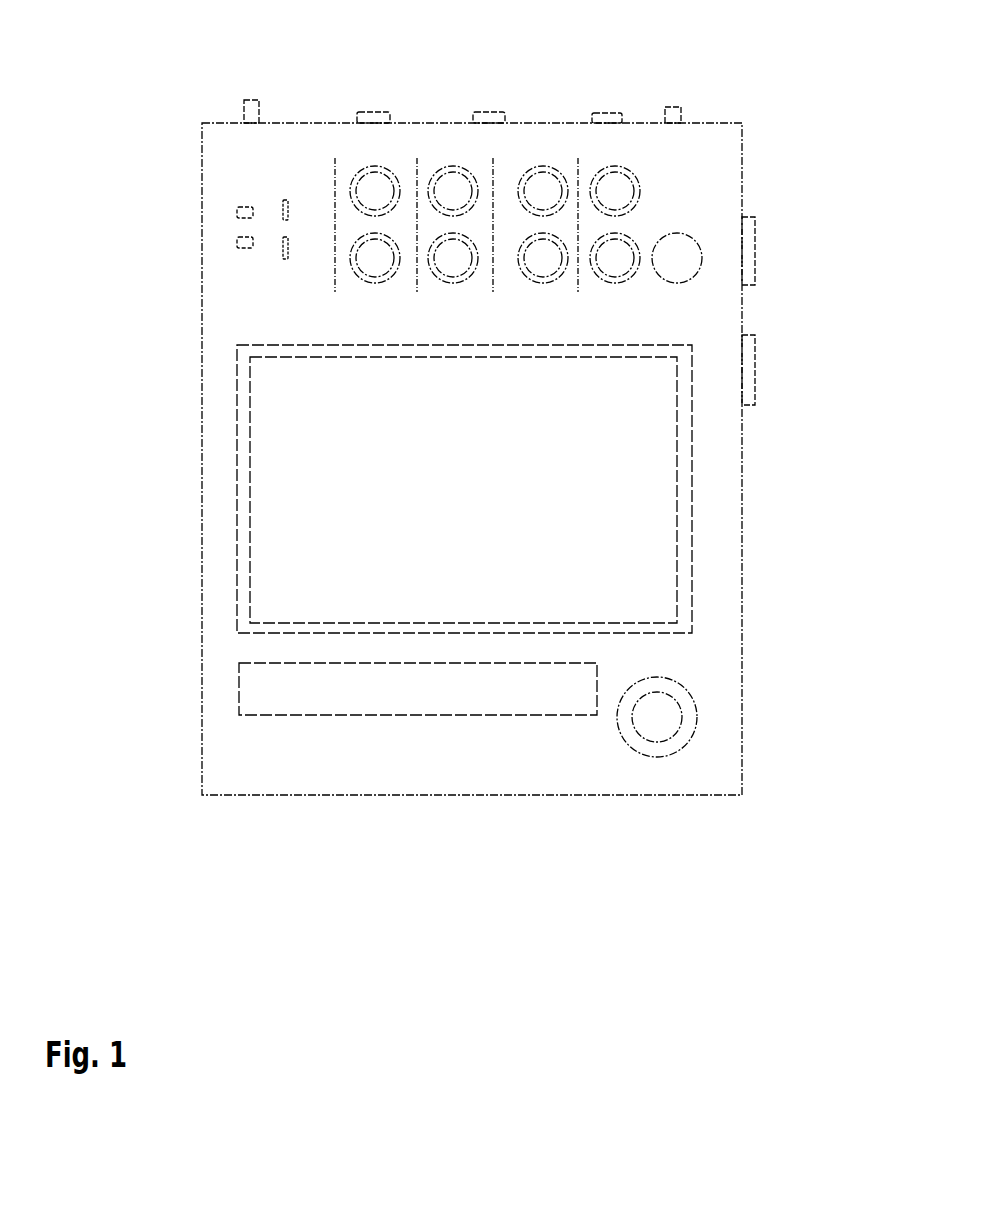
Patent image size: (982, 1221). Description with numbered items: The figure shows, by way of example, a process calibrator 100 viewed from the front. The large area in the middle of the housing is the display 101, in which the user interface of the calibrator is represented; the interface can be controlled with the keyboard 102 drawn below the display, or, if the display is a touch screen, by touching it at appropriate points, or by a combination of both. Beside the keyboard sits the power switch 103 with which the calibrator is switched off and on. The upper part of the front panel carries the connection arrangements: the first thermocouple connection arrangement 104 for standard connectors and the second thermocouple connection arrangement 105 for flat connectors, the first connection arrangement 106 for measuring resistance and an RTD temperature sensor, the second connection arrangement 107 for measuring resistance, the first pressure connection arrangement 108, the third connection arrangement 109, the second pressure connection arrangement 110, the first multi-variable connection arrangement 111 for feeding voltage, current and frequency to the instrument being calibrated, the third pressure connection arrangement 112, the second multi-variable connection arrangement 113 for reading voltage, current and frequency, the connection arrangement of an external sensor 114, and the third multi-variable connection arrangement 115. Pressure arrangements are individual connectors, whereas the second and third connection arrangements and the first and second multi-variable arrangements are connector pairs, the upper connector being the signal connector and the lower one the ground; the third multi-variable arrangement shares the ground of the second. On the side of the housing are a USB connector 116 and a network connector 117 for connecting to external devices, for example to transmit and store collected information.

The process calibrator 100 is at (69, 46).
The display 101 is at (237, 422).
The keyboard 102 is at (238, 677).
The power switch 103 is at (651, 755).
The first thermocouple connection arrangement 104 is at (237, 222).
The second thermocouple connection arrangement 105 is at (284, 259).
The first connection arrangement 106 is at (251, 99).
The second connection arrangement 107 is at (358, 165).
The first pressure connection arrangement 108 is at (378, 111).
The third connection arrangement 109 is at (452, 165).
The second pressure connection arrangement 110 is at (495, 111).
The first multi-variable connection arrangement 111 is at (540, 165).
The third pressure connection arrangement 112 is at (605, 112).
The second multi-variable connection arrangement 113 is at (622, 165).
The connection arrangement of an external sensor 114 is at (675, 106).
The third multi-variable connection arrangement 115 is at (689, 234).
The USB connector 116 is at (755, 258).
The network connector 117 is at (755, 365).